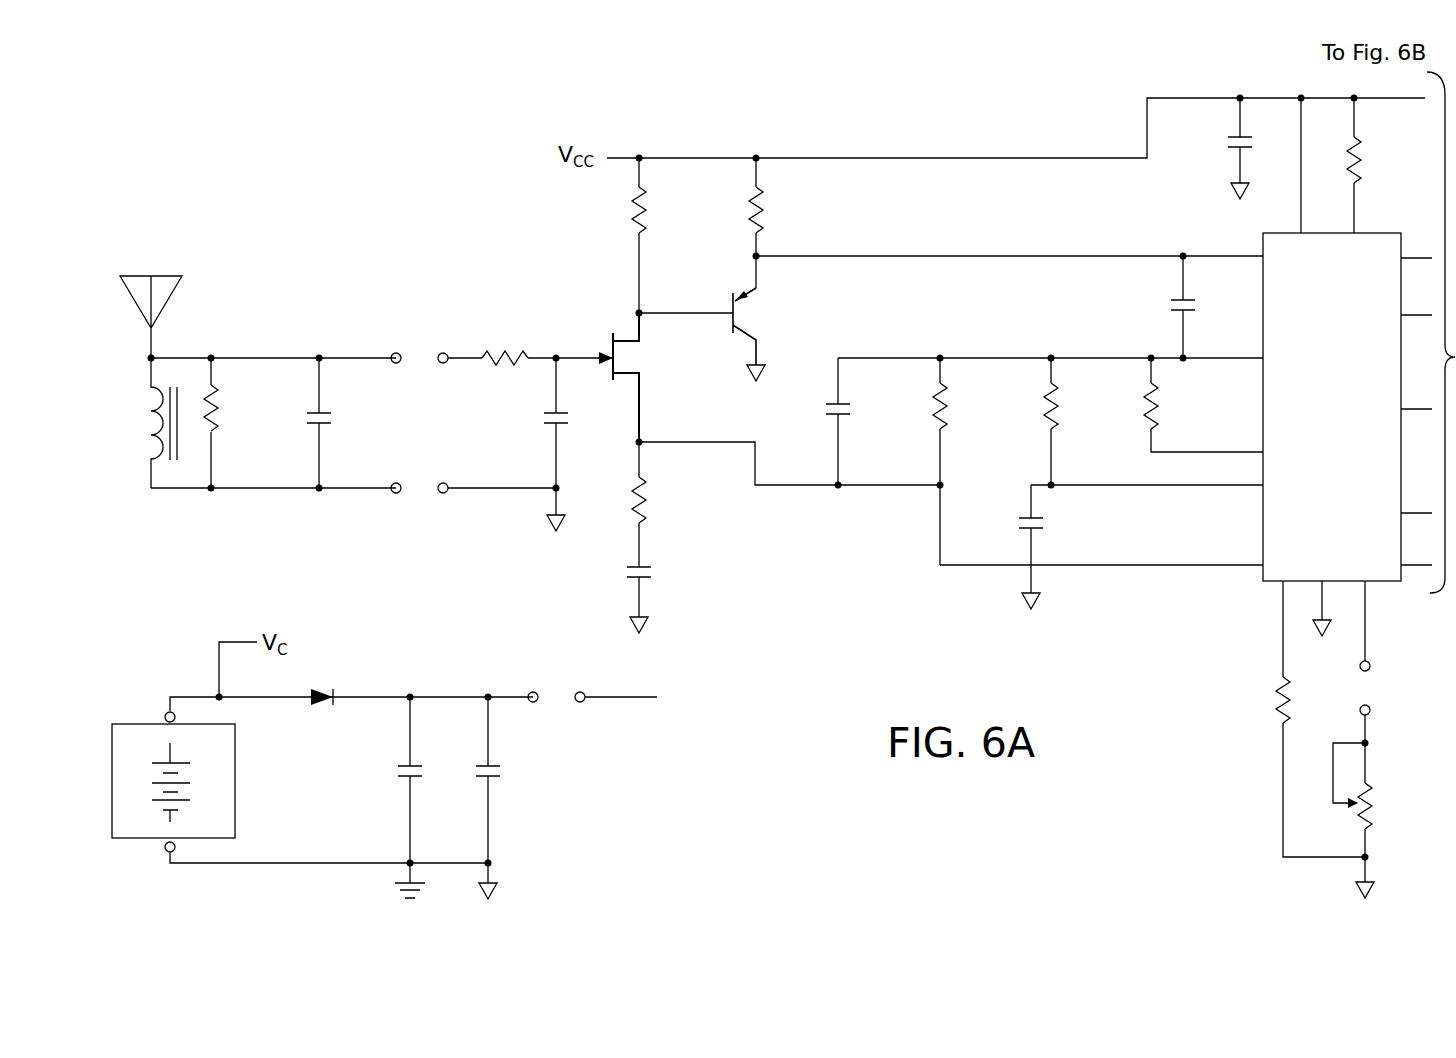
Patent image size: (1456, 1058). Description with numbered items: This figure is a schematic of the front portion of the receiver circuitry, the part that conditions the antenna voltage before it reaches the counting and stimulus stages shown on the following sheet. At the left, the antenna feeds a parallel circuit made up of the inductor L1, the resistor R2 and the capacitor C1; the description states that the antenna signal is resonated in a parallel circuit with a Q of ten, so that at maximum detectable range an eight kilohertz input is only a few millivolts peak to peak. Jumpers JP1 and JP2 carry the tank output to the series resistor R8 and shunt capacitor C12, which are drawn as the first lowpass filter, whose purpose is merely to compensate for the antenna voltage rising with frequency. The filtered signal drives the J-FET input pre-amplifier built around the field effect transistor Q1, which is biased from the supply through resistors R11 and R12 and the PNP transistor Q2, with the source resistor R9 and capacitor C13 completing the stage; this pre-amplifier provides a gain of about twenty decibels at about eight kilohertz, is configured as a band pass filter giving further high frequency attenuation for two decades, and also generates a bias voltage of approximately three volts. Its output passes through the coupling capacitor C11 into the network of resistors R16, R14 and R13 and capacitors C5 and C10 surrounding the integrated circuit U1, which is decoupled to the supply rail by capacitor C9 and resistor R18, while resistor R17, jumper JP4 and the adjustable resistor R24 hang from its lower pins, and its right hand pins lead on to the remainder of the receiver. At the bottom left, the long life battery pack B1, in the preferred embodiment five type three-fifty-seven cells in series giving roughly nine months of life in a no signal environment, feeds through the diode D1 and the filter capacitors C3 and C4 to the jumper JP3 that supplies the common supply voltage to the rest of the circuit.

The antenna tank inductor L1 is at (147, 423).
The resistor 8.2K R2 is at (238, 423).
The capacitor .039 C1 is at (345, 423).
The jumper JP1 is at (436, 343).
The jumper JP2 is at (473, 473).
The resistor 39K R8 is at (545, 357).
The capacitor 330 C12 is at (578, 443).
The JFET PN4118(A) Q1 is at (686, 377).
The resistor 820K R11 is at (672, 248).
The resistor 270K R12 is at (789, 222).
The PNP transistor 2N5087 Q2 is at (790, 334).
The resistor 68K R9 is at (665, 504).
The capacitor .0047 C13 is at (670, 586).
The capacitor 10pF C11 is at (865, 423).
The resistor 680K R16 is at (972, 460).
The resistor 220K R14 is at (1083, 422).
The resistor 220K R13 is at (1203, 404).
The capacitor .001 C5 is at (1101, 544).
The capacitor 4.7pF C10 is at (1145, 307).
The capacitor .1u C9 is at (1223, 147).
The resistor 2.7 MEG R18 is at (1382, 164).
The integrated circuit MMA-092 U1 is at (1341, 341).
The resistor 10K R17 is at (1293, 719).
The jumper JP4 is at (1385, 662).
The potentiometer 50K R24 is at (1378, 819).
The battery 5x 357 cells B1 is at (212, 782).
The diode 1N4148 D1 is at (309, 693).
The capacitor 10uF 25V C3 is at (389, 796).
The capacitor .1u C4 is at (507, 797).
The jumper JP3 is at (612, 690).